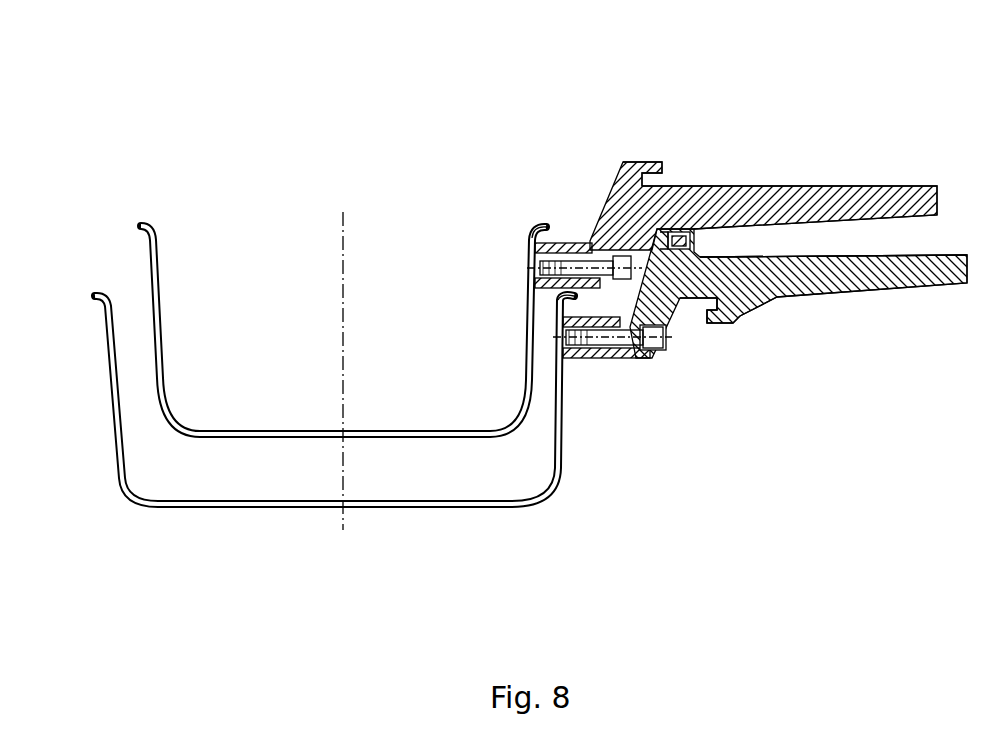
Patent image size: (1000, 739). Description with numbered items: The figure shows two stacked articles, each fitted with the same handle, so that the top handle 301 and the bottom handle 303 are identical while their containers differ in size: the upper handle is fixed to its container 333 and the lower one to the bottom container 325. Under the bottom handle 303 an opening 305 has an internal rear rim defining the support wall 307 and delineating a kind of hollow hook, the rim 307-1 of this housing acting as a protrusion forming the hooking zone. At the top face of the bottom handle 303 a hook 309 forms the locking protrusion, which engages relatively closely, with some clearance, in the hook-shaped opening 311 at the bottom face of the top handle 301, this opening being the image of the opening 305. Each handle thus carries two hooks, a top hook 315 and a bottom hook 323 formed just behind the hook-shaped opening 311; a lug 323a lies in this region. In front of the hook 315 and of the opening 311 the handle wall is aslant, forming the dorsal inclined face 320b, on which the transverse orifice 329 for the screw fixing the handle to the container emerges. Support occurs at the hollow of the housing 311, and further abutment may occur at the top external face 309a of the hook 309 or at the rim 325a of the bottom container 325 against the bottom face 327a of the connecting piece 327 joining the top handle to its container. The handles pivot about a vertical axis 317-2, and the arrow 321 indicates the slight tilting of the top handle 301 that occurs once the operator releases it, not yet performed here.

The arrow 321 is at (607, 42).
The hook 315 is at (630, 161).
The top handle 301 is at (851, 184).
The top external face of the hook 309a is at (658, 238).
The hook 309 is at (677, 236).
The lug 323a is at (688, 233).
The hook-shaped opening 311 is at (622, 214).
The connecting piece 327 is at (555, 243).
The transverse orifice 329 is at (540, 226).
The vertical axis 317-2 is at (340, 268).
The container 333 is at (182, 406).
The rim 325a is at (563, 296).
The bottom container 325 is at (555, 410).
The bottom face of the connecting piece 327a is at (596, 360).
The dorsal inclined face 320b is at (660, 362).
The opening 305 is at (692, 306).
The rim 307-1 is at (712, 328).
The support wall 307 is at (733, 320).
The bottom handle 303 is at (852, 298).
The hook 323 is at (746, 257).